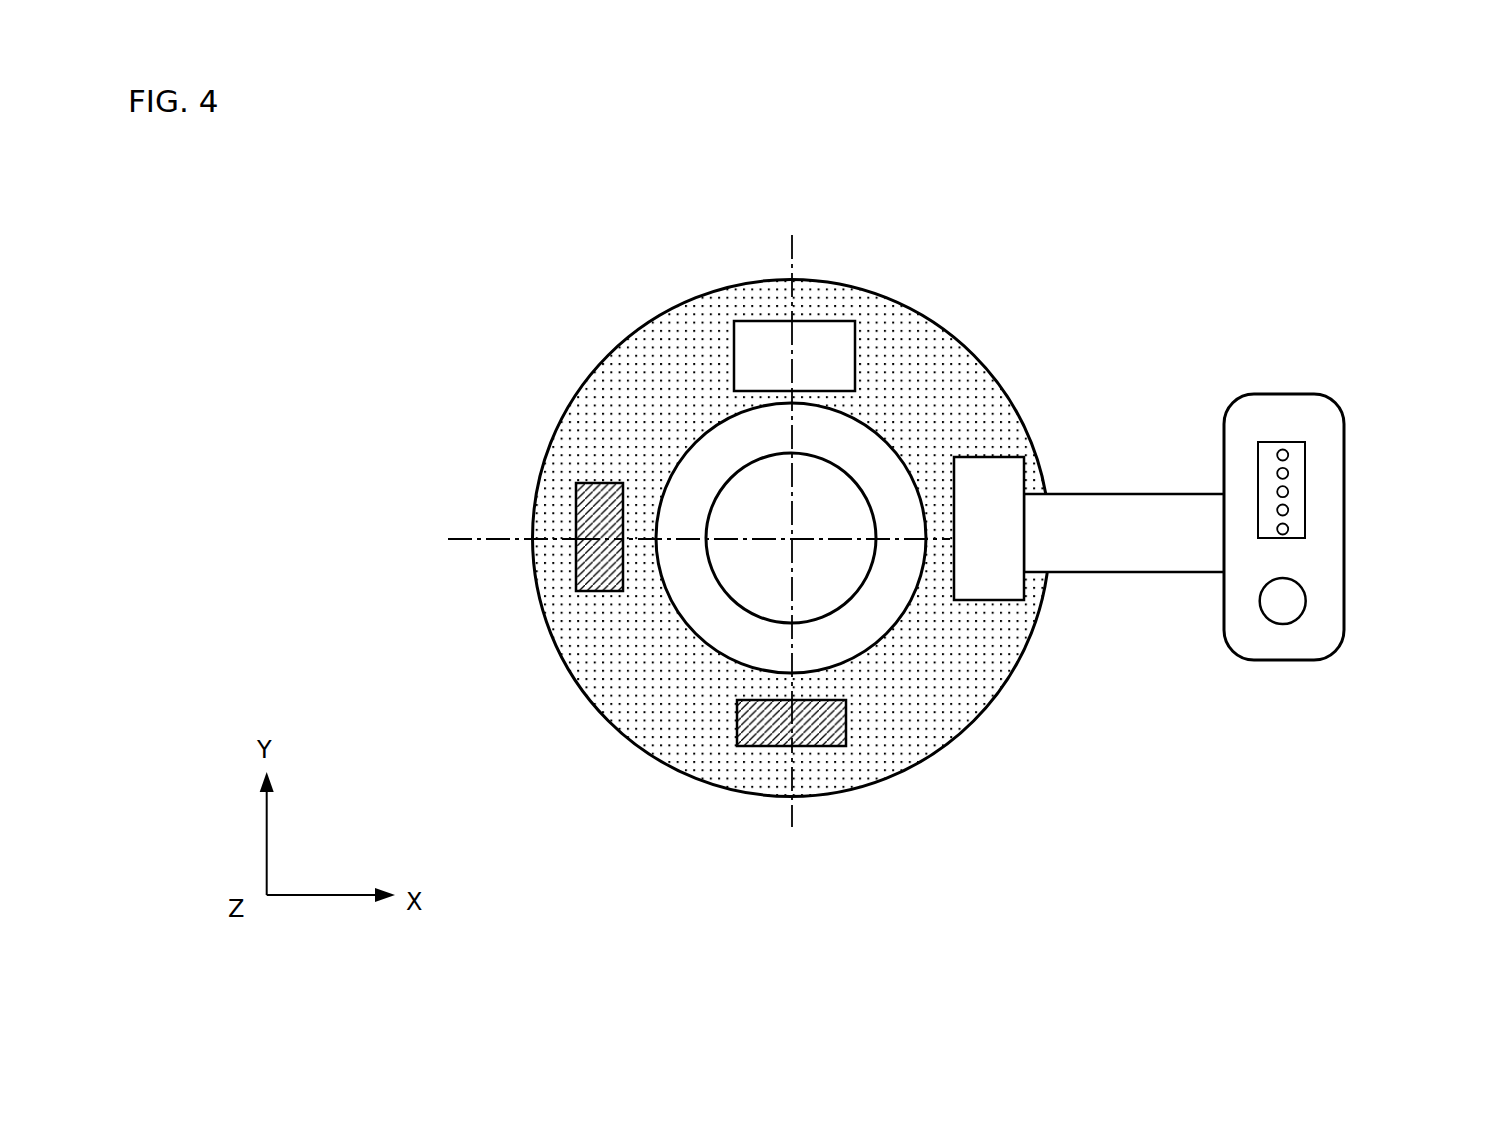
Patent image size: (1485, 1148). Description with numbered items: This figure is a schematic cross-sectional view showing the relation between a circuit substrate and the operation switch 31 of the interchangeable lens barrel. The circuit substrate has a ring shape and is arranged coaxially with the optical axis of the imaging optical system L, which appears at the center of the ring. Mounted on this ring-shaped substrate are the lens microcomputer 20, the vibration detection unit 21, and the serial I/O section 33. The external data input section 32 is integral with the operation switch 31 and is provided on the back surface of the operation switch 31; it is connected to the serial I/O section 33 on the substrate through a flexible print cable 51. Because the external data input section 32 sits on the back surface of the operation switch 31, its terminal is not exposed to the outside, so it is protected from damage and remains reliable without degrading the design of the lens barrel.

The lens microcomputer 20 is at (837, 320).
The vibration detection unit 21 is at (577, 568).
The operation switch 31 is at (1297, 613).
The external data input section 32 is at (1302, 490).
The serial I/O section 33 is at (998, 600).
The flexible print cable 51 is at (1092, 494).
The imaging optical system L is at (732, 478).